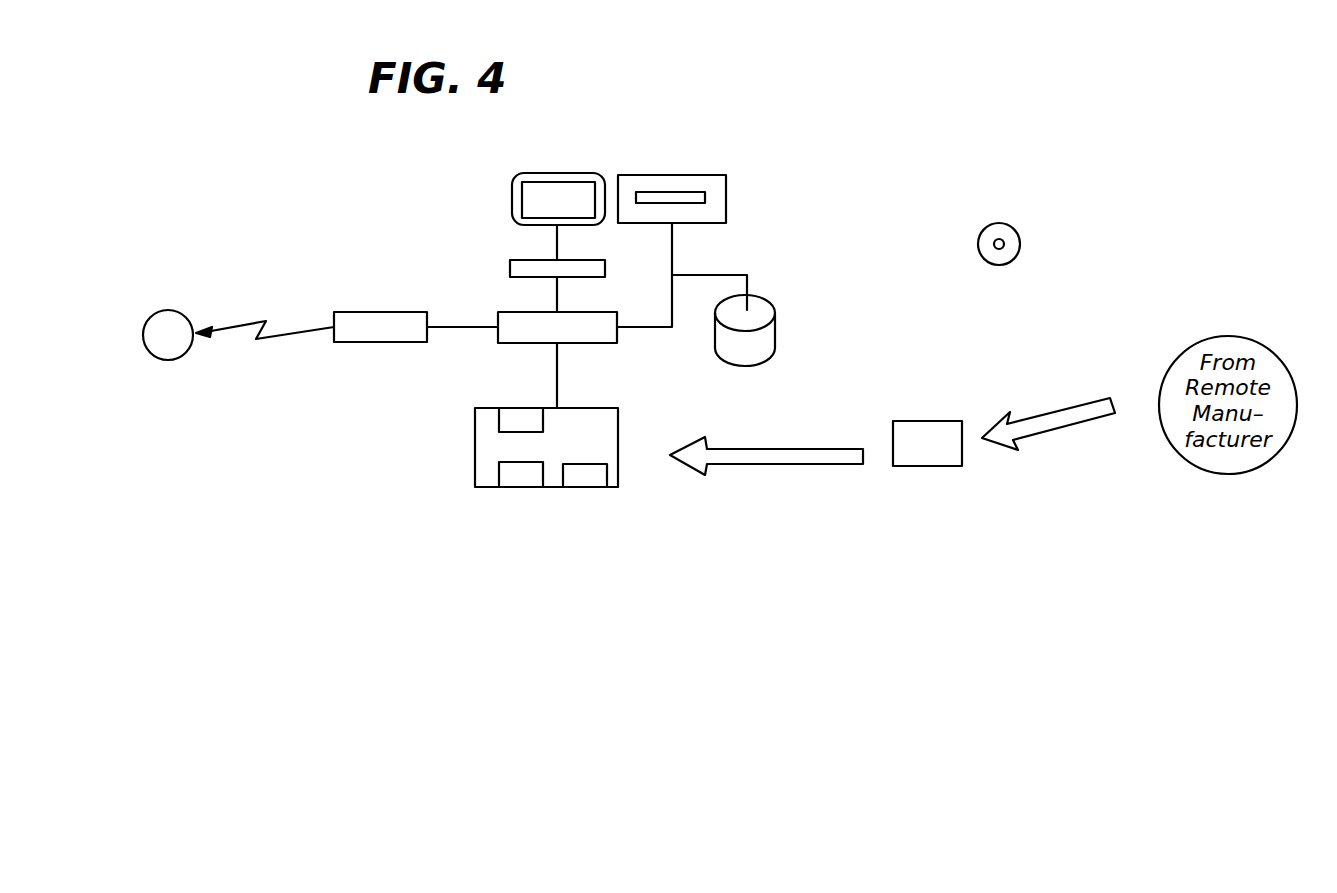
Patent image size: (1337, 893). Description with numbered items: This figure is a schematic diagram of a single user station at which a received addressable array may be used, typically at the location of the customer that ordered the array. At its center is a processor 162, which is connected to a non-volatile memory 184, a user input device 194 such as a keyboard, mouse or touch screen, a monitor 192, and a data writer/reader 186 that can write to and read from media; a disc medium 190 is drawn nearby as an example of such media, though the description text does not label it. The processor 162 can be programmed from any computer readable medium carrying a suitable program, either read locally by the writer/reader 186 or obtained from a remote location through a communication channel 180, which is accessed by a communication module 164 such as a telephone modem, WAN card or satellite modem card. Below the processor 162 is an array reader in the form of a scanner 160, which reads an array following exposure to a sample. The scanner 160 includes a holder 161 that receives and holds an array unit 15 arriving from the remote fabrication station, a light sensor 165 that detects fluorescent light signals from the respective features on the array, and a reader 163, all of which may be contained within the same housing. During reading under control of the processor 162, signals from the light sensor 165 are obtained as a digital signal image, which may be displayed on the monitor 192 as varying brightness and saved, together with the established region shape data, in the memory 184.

The array unit 15 is at (927, 421).
The scanner 160 is at (475, 457).
The holder 161 is at (517, 480).
The processor 162 is at (610, 310).
The reader 163 is at (590, 481).
The communication module 164 is at (389, 342).
The light sensor 165 is at (518, 420).
The communication channel 180 is at (179, 311).
The non-volatile memory 184 is at (775, 333).
The data writer/reader 186 is at (726, 199).
The disc medium 190 is at (1020, 244).
The monitor 192 is at (512, 208).
The user input device 194 is at (510, 268).